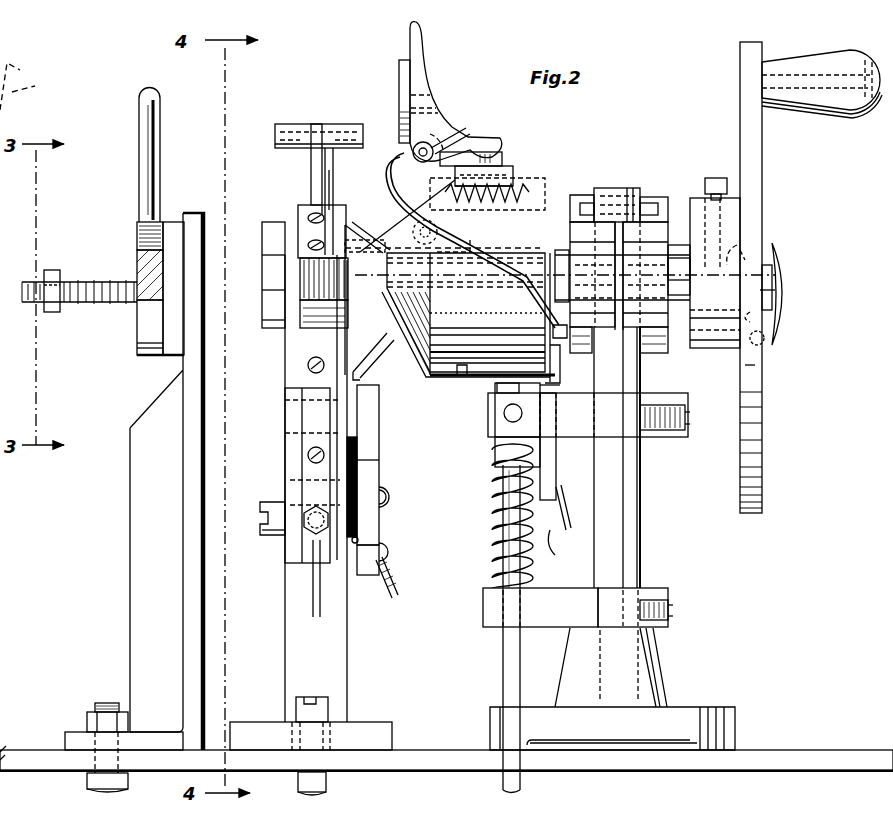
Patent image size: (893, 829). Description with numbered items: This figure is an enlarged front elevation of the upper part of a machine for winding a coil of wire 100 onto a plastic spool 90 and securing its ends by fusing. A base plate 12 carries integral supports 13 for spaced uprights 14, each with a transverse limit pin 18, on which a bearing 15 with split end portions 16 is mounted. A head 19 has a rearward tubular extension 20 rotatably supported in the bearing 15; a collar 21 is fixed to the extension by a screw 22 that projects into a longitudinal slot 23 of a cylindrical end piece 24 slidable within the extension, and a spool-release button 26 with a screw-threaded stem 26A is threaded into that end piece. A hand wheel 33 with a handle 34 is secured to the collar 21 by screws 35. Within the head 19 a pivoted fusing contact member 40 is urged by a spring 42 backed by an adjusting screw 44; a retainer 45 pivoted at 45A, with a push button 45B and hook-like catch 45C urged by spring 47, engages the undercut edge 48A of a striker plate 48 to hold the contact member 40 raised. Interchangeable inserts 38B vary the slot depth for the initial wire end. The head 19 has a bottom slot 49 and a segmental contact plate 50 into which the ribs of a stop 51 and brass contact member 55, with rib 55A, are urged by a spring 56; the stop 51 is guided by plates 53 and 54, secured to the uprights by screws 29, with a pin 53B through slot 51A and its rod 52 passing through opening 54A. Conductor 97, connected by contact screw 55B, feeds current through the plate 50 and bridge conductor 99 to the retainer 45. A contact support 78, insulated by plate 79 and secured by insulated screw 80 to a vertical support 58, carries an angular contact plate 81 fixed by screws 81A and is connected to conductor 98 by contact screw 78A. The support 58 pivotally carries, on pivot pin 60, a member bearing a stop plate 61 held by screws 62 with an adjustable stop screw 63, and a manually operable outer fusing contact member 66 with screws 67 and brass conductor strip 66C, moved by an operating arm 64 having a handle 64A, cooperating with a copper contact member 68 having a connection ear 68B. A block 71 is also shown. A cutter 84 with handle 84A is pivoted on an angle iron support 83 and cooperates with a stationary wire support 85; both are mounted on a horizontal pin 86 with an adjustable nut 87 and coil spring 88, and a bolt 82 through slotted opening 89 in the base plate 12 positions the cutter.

The base plate 12 is at (773, 760).
The integral supports 13 is at (652, 690).
The uprights 14 is at (630, 549).
The bearing 15 is at (665, 195).
The split 16 is at (633, 340).
The transverse limit pin 18 is at (584, 196).
The head 19 is at (575, 155).
The tubular extension 20 is at (765, 320).
The collar 21 is at (735, 198).
The screw 22 is at (727, 160).
The longitudinal slot 23 is at (745, 238).
The cylindrical end piece 24 is at (752, 250).
The spool-release button 26 is at (782, 250).
The screw-threaded stem 26A is at (780, 290).
The screws 29 is at (688, 414).
The hand wheel 33 is at (752, 151).
The handle 34 is at (813, 100).
The screws 35 is at (764, 345).
The interchangeable inserts 38B is at (450, 240).
The fusing contact member 40 is at (410, 180).
The spring 42 is at (478, 210).
The adjusting screw 44 is at (584, 205).
The retainer 45 is at (418, 50).
The pivot 45A is at (427, 147).
The push button 45B is at (399, 70).
The hook-like catch 45C is at (495, 140).
The spring 47 is at (468, 128).
The striker plate 48 is at (515, 172).
The undercut edge 48A is at (518, 160).
The bottom slot 49 is at (475, 378).
The segmental electrical contact plate 50 is at (560, 360).
The stop 51 is at (492, 446).
The slot 51A is at (498, 395).
The rod 52 is at (500, 655).
The guide plate 53 is at (672, 440).
The pin 53B is at (505, 416).
The guide plate 54 is at (672, 590).
The vertical opening 54A is at (488, 608).
The brass contact member 55 is at (550, 470).
The contact rib 55A is at (558, 385).
The contact screw 55B is at (560, 488).
The spring 56 is at (492, 498).
The vertical support 58 is at (328, 659).
The pivot pin 60 is at (292, 436).
The stop plate 61 is at (292, 494).
The screws 62 is at (308, 458).
The adjustable stop screw 63 is at (312, 535).
The operating arm 64 is at (312, 170).
The handle 64A is at (298, 124).
The outer fusing contact member 66 is at (306, 210).
The brass conductor strip 66C is at (334, 182).
The screws 67 is at (324, 222).
The electrical copper contact member 68 is at (300, 373).
The electrical conductor connection ear 68B is at (332, 186).
The block 71 is at (266, 222).
The electrical contact support 78 is at (375, 527).
The contact screw 78A is at (388, 552).
The insulating plate 79 is at (360, 540).
The insulated screw 80 is at (390, 497).
The angular contact plate 81 is at (380, 380).
The screws 81A is at (378, 352).
The bolt 82 is at (92, 706).
The angle iron support 83 is at (144, 596).
The cutter 84 is at (148, 338).
The handle 84A is at (146, 127).
The stationary wire support 85 is at (175, 340).
The horizontal pin 86 is at (30, 303).
The adjustable nut 87 is at (52, 268).
The coil spring 88 is at (96, 305).
The slotted opening 89 is at (72, 770).
The spool 90 is at (318, 318).
The conductor 97 is at (559, 543).
The conductor 98 is at (398, 596).
The bridge conductor 99 is at (498, 248).
The coiled wire 100 is at (345, 240).